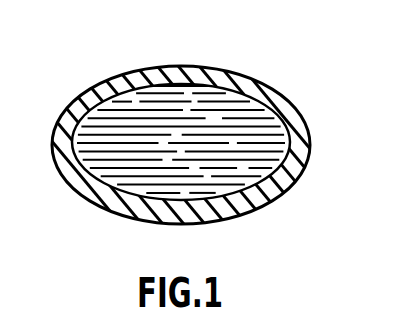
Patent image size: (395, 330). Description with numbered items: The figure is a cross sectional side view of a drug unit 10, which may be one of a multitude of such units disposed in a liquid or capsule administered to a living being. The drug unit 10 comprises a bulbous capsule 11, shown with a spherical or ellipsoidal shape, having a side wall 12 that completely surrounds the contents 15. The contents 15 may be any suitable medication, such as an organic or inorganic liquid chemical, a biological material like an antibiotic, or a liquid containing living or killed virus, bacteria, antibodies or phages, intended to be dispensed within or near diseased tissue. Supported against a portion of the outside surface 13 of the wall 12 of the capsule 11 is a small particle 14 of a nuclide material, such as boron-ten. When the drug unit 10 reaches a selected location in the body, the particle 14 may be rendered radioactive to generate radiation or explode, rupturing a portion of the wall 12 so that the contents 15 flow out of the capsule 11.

The drug unit 10 is at (197, 121).
The bulbous capsule 11 is at (302, 127).
The side wall 12 is at (267, 88).
The outside surface 13 is at (88, 145).
The particle of nuclide material 14 is at (100, 74).
The contents 15 is at (286, 185).